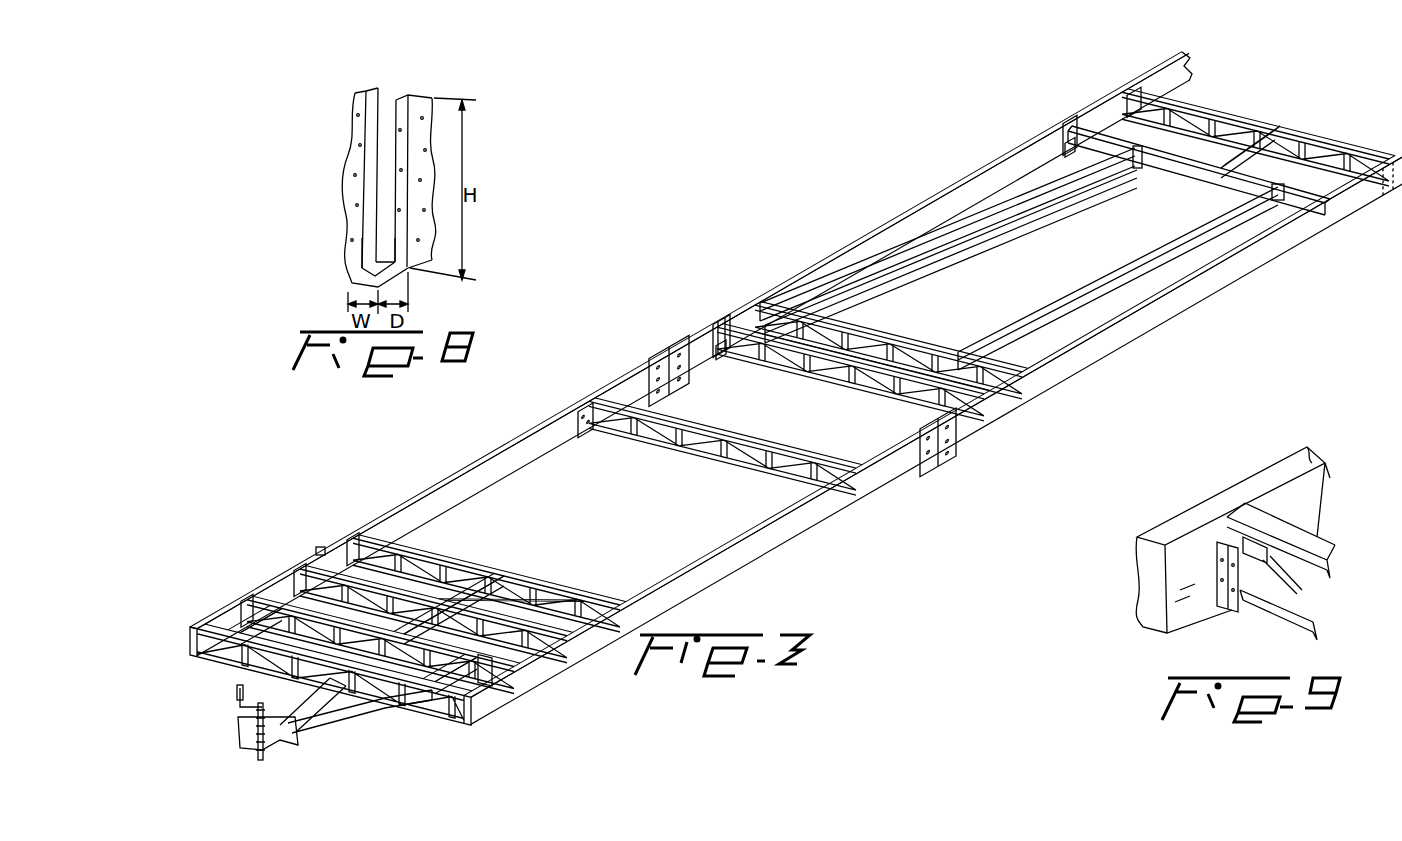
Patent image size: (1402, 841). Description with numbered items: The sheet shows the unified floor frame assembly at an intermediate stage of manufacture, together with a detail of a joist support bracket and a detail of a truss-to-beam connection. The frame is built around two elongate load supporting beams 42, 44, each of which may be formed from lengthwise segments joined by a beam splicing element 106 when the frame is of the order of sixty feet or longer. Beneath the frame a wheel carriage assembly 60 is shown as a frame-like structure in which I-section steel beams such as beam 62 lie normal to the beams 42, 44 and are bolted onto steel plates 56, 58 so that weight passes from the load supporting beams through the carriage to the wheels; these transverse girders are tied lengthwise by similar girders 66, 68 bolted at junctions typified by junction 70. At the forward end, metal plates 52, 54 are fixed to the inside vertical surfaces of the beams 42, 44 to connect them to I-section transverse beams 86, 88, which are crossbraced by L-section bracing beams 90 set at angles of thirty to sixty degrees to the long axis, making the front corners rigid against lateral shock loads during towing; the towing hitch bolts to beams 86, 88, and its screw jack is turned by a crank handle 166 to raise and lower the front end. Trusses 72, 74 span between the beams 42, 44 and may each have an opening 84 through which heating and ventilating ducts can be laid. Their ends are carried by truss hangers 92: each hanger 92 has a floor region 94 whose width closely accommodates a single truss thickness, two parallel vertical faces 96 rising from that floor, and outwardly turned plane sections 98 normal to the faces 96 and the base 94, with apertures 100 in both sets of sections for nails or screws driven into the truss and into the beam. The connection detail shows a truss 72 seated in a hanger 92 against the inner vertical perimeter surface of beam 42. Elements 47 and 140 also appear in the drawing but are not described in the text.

In FIG. 3, the elongate load supporting beam 42 is at (815, 268).
In FIG. 9, the elongate load supporting beam 42 is at (1268, 478).
In FIG. 3, the elongate load supporting beam 44 is at (1100, 345).
In FIG. 3, the tongue 47 is at (430, 719).
In FIG. 3, the metal plate 52 is at (226, 612).
In FIG. 3, the metal plate 54 is at (322, 547).
In FIG. 3, the steel plate 56 is at (718, 320).
In FIG. 3, the steel plate 58 is at (1068, 117).
In FIG. 3, the wheel carriage assembly 60 is at (985, 228).
In FIG. 3, the I-section steel beam 62 is at (840, 380).
In FIG. 3, the girder 66 is at (950, 262).
In FIG. 3, the girder 68 is at (1125, 265).
In FIG. 3, the junction 70 is at (1143, 163).
In FIG. 3, the truss 72 is at (1318, 135).
In FIG. 9, the truss 72 is at (1308, 556).
In FIG. 3, the truss 74 is at (930, 350).
In FIG. 3, the opening 84 is at (479, 584).
In FIG. 3, the I-section transverse beam 86 is at (250, 622).
In FIG. 3, the I-section transverse beam 88 is at (516, 600).
In FIG. 3, the bracing beam 90 is at (300, 570).
In FIG. 3, the truss hanger 92 is at (586, 436).
In FIG. 8, the truss hanger 92 is at (403, 167).
In FIG. 9, the truss hanger 92 is at (1228, 610).
In FIG. 8, the floor region 94 is at (362, 270).
In FIG. 8, the vertical face 96 is at (368, 246).
In FIG. 8, the plane section 98 is at (358, 113).
In FIG. 8, the aperture 100 is at (432, 140).
In FIG. 3, the beam splicing element 106 is at (664, 346).
In FIG. 3, the hanger strap 140 is at (728, 356).
In FIG. 3, the crank handle 166 is at (238, 712).